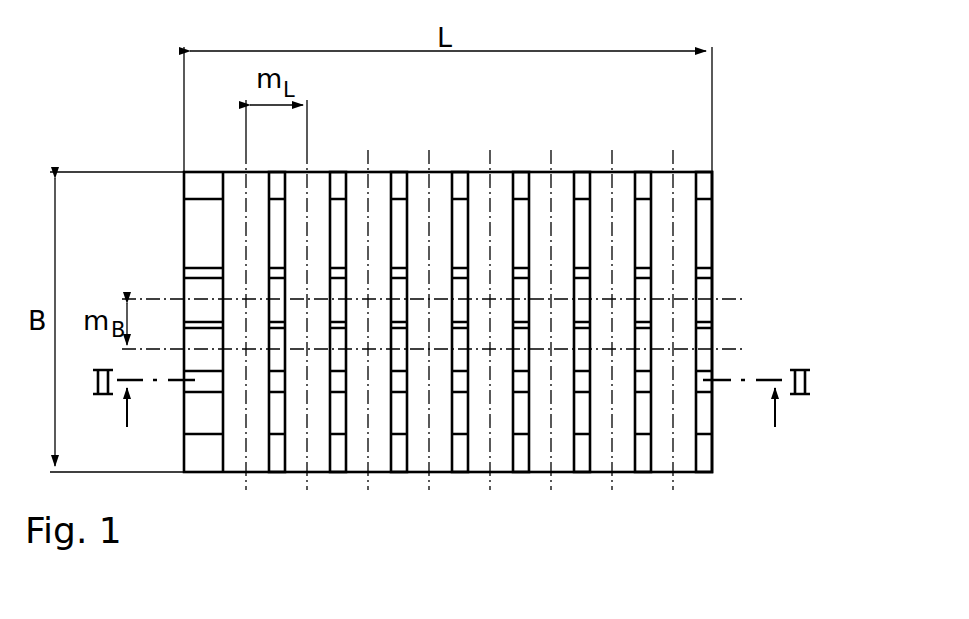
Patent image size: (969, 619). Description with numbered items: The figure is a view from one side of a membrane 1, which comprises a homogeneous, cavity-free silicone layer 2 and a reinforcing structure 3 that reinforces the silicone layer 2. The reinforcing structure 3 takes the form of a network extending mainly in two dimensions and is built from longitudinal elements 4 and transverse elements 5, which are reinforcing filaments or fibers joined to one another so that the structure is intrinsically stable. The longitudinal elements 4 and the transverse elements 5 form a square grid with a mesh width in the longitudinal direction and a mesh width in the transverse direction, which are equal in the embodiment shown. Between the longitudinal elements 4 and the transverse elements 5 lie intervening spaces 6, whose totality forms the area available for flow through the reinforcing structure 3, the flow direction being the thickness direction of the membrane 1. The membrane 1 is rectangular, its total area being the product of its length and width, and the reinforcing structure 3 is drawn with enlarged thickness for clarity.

The membrane 1 is at (750, 100).
The silicone layer 2 is at (698, 172).
The reinforcing structure 3 is at (583, 170).
The longitudinal elements 4 is at (728, 299).
The transverse elements 5 is at (368, 149).
The intervening spaces 6 is at (518, 175).